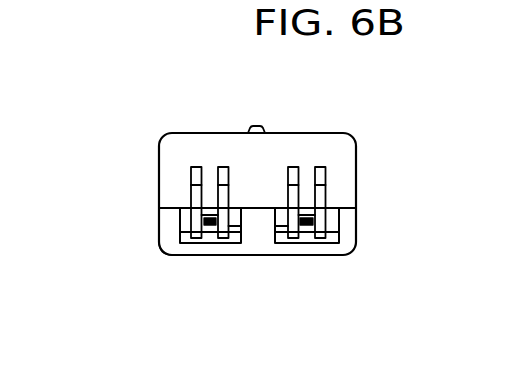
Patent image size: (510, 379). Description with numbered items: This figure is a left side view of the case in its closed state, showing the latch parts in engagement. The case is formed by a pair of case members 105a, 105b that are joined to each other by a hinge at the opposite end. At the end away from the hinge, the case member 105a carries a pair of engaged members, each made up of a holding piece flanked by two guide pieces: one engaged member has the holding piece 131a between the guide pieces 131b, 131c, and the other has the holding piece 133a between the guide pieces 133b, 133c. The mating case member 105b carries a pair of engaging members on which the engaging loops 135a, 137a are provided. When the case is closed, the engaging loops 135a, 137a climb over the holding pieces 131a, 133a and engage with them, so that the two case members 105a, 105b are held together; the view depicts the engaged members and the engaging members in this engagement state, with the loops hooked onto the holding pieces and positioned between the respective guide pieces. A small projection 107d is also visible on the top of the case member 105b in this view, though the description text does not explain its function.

The case member 105a is at (178, 257).
The case member 105b is at (340, 133).
The locking projection 107d is at (260, 127).
The holding piece 131a is at (211, 226).
The guide piece 131b is at (177, 231).
The guide piece 131c is at (236, 227).
The holding piece 133a is at (308, 227).
The guide piece 133b is at (282, 232).
The guide piece 133c is at (332, 225).
The engaging loop 135a is at (195, 203).
The engaging loop 137a is at (318, 192).